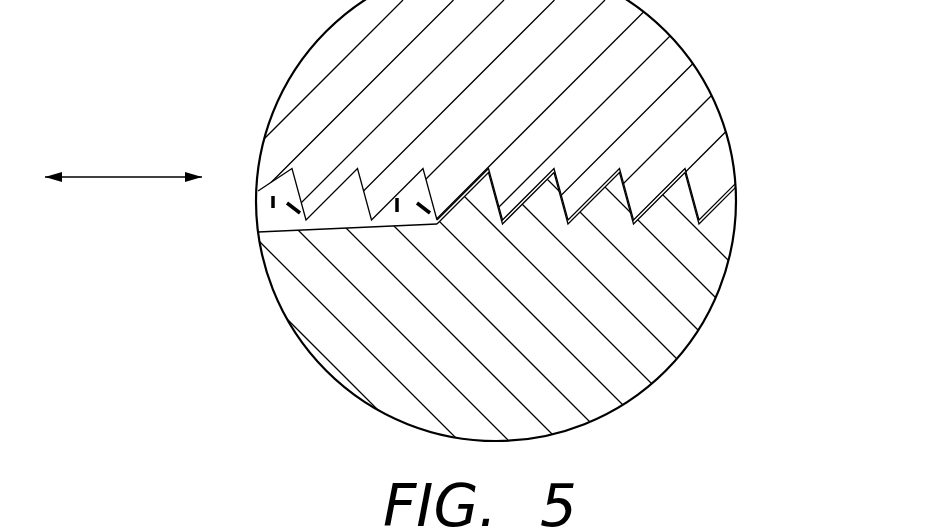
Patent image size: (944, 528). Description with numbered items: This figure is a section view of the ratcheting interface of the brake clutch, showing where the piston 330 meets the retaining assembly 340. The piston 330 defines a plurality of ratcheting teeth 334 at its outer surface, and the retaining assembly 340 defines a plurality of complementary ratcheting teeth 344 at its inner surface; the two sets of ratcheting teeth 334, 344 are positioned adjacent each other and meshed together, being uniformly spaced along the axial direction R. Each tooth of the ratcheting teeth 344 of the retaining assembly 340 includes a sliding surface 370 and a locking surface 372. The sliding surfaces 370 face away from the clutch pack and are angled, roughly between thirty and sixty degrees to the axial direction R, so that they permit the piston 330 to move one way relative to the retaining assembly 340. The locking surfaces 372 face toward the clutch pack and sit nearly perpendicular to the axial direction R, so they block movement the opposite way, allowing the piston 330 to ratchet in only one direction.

The piston 330 is at (459, 225).
The retaining assembly 340 is at (429, 225).
The ratcheting teeth 334 is at (547, 198).
The ratcheting teeth 344 is at (643, 186).
The sliding surface 370 is at (273, 196).
The locking surface 372 is at (290, 205).
The axial direction R is at (113, 176).